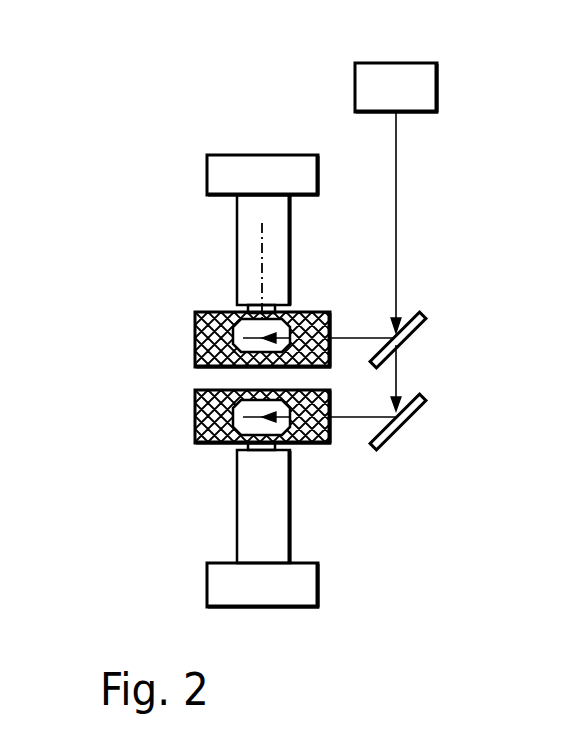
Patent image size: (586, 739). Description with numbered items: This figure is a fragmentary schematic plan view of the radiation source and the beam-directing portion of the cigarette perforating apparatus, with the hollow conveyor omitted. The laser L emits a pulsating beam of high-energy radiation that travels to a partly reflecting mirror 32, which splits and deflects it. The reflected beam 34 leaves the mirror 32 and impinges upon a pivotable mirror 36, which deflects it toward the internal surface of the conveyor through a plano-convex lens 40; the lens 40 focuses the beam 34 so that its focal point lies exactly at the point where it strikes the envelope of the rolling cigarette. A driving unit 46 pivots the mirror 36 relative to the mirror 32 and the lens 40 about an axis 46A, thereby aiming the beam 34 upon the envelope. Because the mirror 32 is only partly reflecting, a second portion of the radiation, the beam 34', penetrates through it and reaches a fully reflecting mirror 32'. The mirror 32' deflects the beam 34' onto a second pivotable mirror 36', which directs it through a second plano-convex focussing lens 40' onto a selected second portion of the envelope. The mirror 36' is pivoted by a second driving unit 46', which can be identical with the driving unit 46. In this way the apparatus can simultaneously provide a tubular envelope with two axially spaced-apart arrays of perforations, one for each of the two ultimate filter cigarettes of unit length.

The laser L is at (437, 87).
The mirror 32 is at (463, 336).
The fully reflecting mirror 32' is at (467, 422).
The beam 34 is at (443, 225).
The beam 34' is at (447, 381).
The pivotable mirror 36 is at (194, 342).
The second pivotable mirror 36' is at (194, 426).
The plano-convex lens 40 is at (214, 323).
The second plano-convex focussing lens 40' is at (214, 405).
The driving unit 46 is at (208, 234).
The second driving unit 46' is at (208, 525).
The axis 46A is at (262, 282).